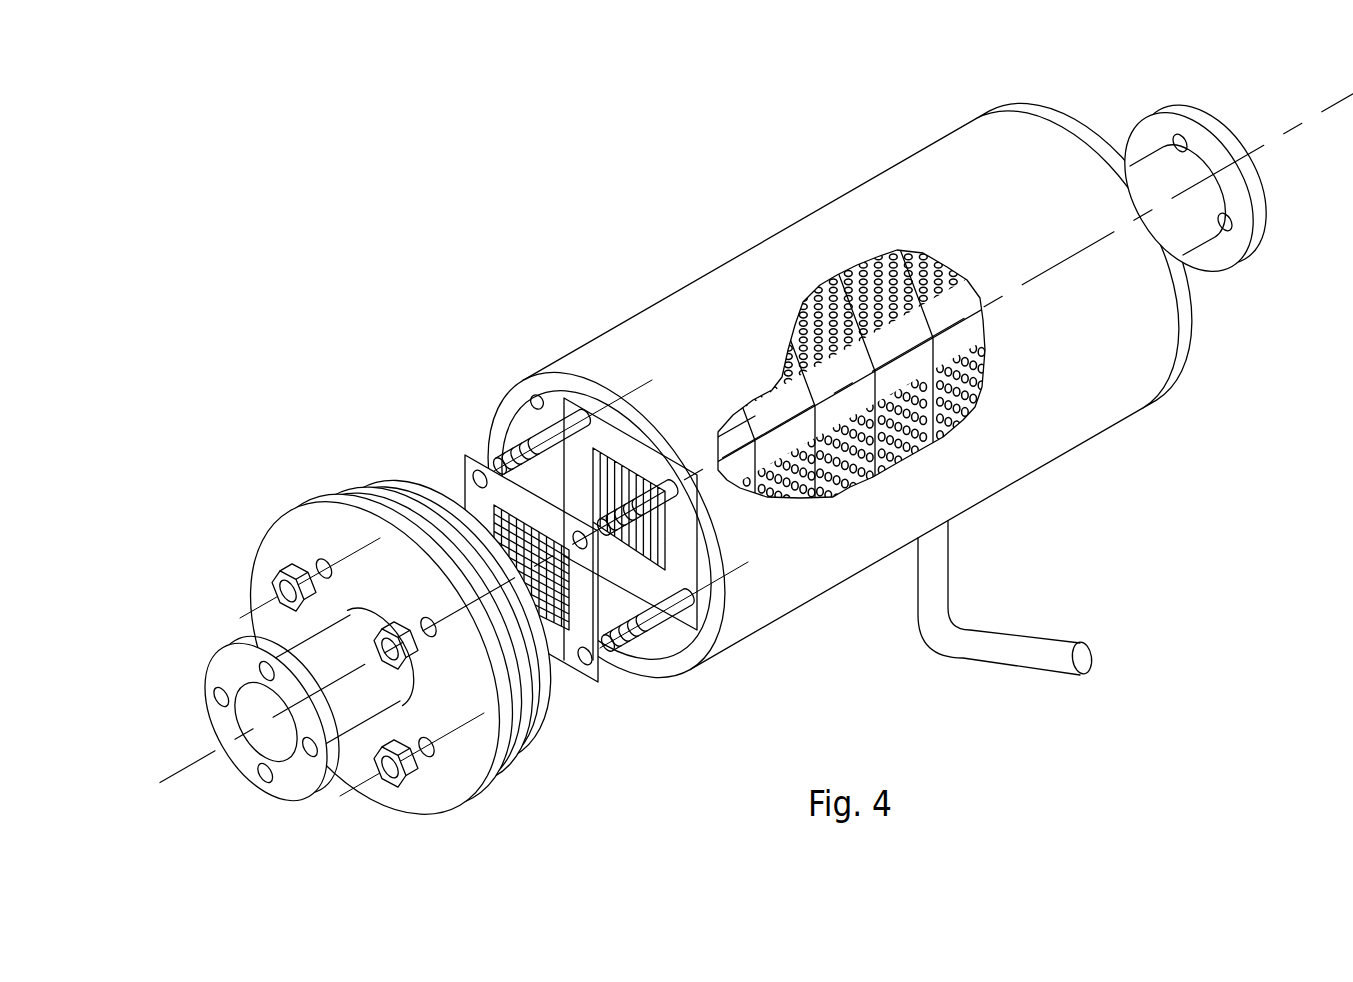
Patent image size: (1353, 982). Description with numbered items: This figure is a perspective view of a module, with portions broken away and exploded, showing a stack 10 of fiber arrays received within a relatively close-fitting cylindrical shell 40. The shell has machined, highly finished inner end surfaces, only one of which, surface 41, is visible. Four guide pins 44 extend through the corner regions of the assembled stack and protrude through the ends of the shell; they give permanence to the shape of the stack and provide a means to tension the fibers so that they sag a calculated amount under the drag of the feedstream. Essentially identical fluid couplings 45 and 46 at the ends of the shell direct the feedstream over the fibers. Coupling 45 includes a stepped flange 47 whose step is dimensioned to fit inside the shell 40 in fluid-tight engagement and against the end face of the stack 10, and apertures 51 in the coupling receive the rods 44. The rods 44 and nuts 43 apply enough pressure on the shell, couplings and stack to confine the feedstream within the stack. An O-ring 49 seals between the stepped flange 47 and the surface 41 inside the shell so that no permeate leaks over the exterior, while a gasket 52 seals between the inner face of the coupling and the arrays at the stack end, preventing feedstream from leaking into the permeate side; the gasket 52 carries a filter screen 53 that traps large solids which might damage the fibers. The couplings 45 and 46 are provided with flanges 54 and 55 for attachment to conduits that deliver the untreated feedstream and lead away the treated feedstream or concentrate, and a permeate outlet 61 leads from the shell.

The stack 10 is at (667, 637).
The cylindrical shell 40 is at (770, 218).
The inner end surface 41 is at (528, 403).
The nuts 43 is at (452, 752).
The guide pins 44 is at (604, 527).
The fluid coupling 45 is at (232, 543).
The fluid coupling 46 is at (1097, 108).
The stepped flange 47 is at (323, 512).
The O-ring 49 is at (527, 713).
The apertures 51 is at (329, 575).
The gasket 52 is at (469, 483).
The filter screen 53 is at (494, 516).
The flange 54 is at (220, 662).
The flange 55 is at (1197, 132).
The permeate outlet 61 is at (1020, 663).